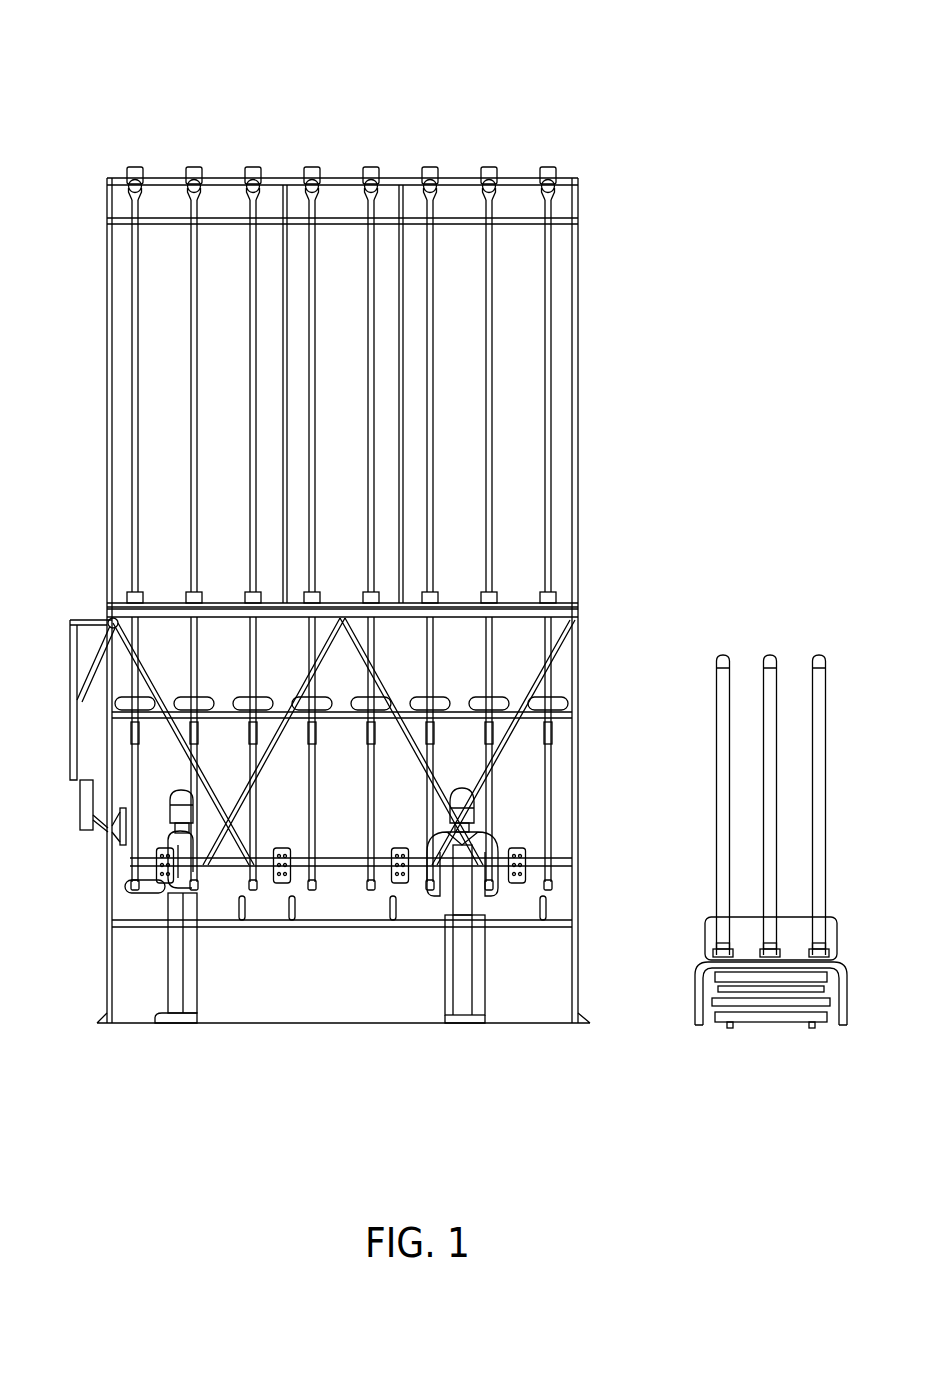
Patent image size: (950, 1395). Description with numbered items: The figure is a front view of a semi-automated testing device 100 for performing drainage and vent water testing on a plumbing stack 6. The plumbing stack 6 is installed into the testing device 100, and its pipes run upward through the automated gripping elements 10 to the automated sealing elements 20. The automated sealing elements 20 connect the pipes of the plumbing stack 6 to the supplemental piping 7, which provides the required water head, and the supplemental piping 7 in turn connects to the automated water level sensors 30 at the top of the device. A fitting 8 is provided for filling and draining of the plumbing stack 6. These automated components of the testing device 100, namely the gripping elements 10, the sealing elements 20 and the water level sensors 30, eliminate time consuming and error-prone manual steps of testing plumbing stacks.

The testing device 100 is at (126, 78).
The automated water level sensor 30 is at (130, 183).
The supplemental piping 7 is at (130, 365).
The automated sealing element 20 is at (130, 595).
The automated gripping element 10 is at (130, 705).
The plumbing stack 6 is at (130, 770).
The fitting 8 is at (130, 912).